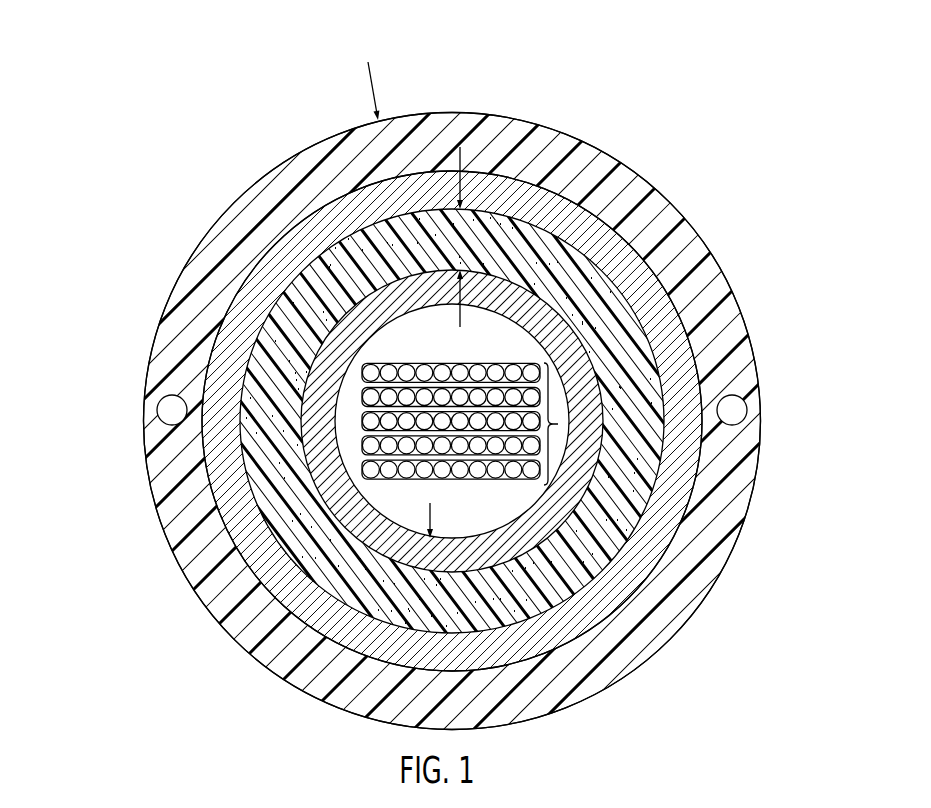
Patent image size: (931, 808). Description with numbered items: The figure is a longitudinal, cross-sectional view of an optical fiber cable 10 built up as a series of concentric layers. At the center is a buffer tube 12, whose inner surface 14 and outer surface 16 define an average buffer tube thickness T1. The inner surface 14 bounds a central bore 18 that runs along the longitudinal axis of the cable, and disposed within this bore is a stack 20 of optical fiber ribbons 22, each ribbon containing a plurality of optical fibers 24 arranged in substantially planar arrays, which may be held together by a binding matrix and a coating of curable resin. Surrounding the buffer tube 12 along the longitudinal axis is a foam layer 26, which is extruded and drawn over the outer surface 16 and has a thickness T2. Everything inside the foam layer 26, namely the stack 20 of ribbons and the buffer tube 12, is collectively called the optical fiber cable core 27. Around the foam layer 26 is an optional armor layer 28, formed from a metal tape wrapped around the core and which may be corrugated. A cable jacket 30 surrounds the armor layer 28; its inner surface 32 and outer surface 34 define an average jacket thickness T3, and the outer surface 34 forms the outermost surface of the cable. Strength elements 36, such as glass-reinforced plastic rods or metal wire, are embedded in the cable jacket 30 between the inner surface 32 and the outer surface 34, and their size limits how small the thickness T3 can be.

The optical fiber cable 10 is at (152, 187).
The buffer tube 12 is at (648, 262).
The inner surface 14 is at (393, 333).
The outer surface 16 is at (263, 580).
The central bore 18 is at (499, 334).
The stack 20 is at (558, 424).
The optical fiber ribbons 22 is at (361, 421).
The optical fibers 24 is at (446, 446).
The foam layer 26 is at (670, 350).
The optical fiber cable core 27 is at (608, 562).
The armor layer 28 is at (237, 530).
The cable jacket 30 is at (712, 568).
The inner surface 32 is at (257, 283).
The outer surface 34 is at (728, 277).
The strength elements 36 is at (163, 413).
The average buffer tube thickness T1 is at (323, 690).
The foam layer thickness T2 is at (462, 152).
The average jacket thickness T3 is at (372, 72).